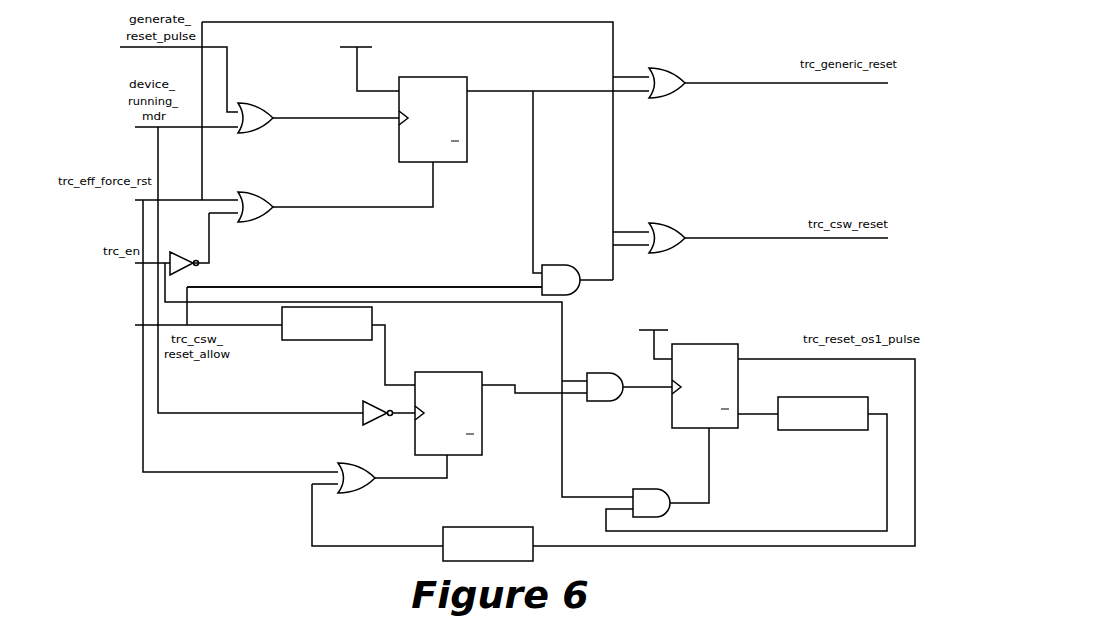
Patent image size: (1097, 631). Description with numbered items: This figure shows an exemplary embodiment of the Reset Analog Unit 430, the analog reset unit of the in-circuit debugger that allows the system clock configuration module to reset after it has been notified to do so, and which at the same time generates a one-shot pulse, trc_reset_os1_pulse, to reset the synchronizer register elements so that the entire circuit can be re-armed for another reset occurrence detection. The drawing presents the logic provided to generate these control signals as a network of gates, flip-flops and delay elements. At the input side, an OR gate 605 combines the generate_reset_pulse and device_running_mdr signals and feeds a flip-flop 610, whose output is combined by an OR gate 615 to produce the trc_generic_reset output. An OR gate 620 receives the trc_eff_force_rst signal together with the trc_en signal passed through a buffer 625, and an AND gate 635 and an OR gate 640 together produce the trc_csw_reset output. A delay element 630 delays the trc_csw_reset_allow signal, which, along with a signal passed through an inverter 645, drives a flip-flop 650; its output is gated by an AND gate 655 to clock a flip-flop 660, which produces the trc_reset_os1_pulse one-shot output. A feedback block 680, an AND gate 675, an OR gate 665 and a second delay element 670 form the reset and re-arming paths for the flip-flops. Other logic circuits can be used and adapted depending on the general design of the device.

The Reset Analog Unit 430 is at (665, 23).
The OR gate 605 is at (318, 107).
The flip-flop 610 is at (450, 104).
The OR gate 615 is at (768, 75).
The OR gate 620 is at (275, 217).
The buffer 625 is at (184, 254).
The delay element 630 is at (326, 340).
The AND gate 635 is at (383, 266).
The OR gate 640 is at (768, 226).
The inverter 645 is at (376, 403).
The flip-flop 650 is at (452, 402).
The AND gate 655 is at (605, 373).
The flip-flop 660 is at (713, 374).
The OR gate 665 is at (361, 492).
The delay element 670 is at (488, 530).
The AND gate 675 is at (651, 490).
The delay block 680 is at (823, 428).